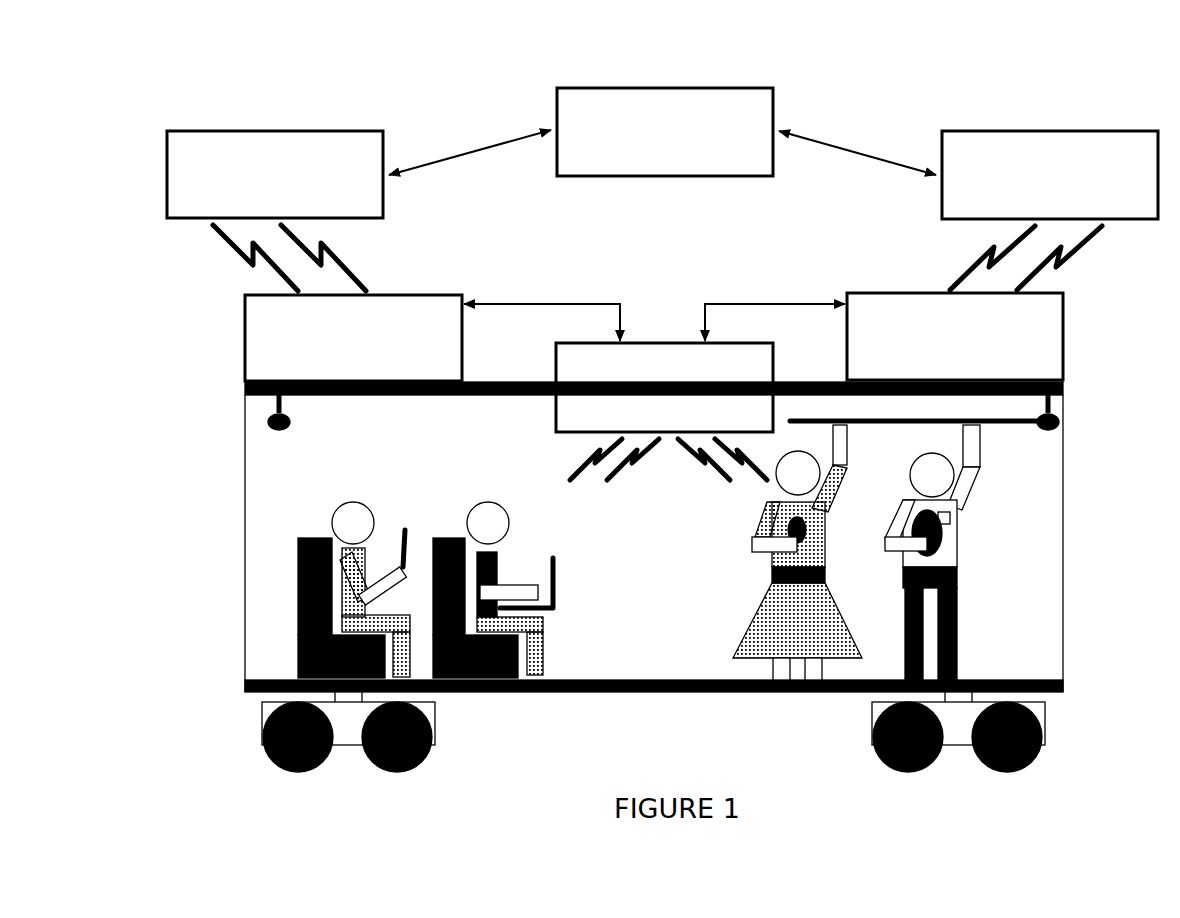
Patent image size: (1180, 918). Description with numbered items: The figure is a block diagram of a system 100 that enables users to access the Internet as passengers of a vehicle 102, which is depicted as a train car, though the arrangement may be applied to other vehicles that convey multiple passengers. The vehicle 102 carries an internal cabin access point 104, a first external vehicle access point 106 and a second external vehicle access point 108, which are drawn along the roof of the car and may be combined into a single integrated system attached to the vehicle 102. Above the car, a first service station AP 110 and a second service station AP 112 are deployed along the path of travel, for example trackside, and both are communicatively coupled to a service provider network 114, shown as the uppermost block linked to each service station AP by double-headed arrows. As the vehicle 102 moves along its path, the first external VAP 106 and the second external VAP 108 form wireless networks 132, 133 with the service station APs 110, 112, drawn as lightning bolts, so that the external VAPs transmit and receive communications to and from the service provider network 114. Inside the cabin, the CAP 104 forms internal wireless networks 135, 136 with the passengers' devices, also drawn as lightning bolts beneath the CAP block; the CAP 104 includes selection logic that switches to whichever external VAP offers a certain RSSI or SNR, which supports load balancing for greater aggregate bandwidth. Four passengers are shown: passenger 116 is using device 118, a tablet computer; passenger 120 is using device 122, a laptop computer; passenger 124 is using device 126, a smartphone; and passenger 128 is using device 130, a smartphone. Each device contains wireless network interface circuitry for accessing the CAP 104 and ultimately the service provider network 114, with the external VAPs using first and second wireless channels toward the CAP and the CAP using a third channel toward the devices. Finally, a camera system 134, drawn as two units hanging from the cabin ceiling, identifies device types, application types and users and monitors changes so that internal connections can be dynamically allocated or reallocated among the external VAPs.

The system 100 is at (925, 88).
The vehicle 102 is at (1064, 580).
The cabin access point 104 is at (664, 387).
The first external vehicle access point 106 is at (353, 338).
The second external vehicle access point 108 is at (955, 336).
The first service station access point 110 is at (275, 174).
The second service station access point 112 is at (1050, 175).
The service provider network 114 is at (665, 132).
The passenger 116 is at (358, 501).
The device 118 is at (408, 528).
The passenger 120 is at (492, 501).
The device 122 is at (557, 578).
The passenger 124 is at (757, 540).
The device 126 is at (826, 522).
The passenger 128 is at (972, 500).
The device 130 is at (940, 545).
The wireless network 132 is at (228, 246).
The wireless network 133 is at (985, 255).
The camera system 134 is at (275, 403).
The internal wireless network 135 is at (621, 470).
The internal wireless network 136 is at (697, 466).